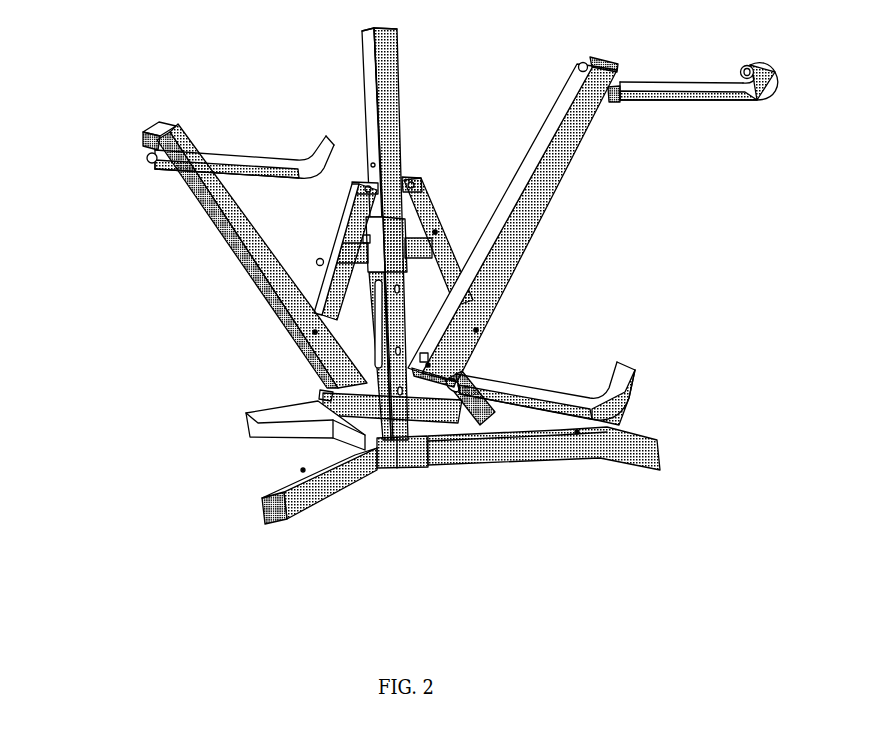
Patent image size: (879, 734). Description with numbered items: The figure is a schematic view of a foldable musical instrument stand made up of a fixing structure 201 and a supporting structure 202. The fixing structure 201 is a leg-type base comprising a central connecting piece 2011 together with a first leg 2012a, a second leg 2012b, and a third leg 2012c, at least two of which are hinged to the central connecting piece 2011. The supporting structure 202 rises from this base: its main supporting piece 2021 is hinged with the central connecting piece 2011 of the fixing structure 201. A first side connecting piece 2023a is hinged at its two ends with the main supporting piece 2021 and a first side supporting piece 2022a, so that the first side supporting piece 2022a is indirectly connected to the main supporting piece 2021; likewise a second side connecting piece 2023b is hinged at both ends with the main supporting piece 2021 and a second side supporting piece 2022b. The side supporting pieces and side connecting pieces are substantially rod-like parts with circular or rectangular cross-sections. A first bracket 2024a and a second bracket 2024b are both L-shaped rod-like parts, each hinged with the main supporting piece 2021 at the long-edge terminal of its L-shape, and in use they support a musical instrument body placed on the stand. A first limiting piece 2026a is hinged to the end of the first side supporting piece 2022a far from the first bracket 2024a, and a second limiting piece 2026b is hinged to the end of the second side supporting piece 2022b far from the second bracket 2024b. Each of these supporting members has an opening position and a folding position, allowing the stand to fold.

The fixing structure 201 is at (423, 487).
The central connecting piece 2011 is at (542, 480).
The first leg 2012a is at (249, 429).
The second leg 2012b is at (255, 486).
The third leg 2012c is at (570, 436).
The supporting structure 202 is at (401, 230).
The main supporting piece 2021 is at (520, 230).
The first side supporting piece 2022a is at (561, 222).
The second side supporting piece 2022b is at (250, 261).
The first side connecting piece 2023a is at (558, 242).
The second side connecting piece 2023b is at (255, 252).
The first bracket 2024a is at (585, 368).
The second bracket 2024b is at (314, 383).
The first limiting piece 2026a is at (693, 116).
The second limiting piece 2026b is at (234, 118).